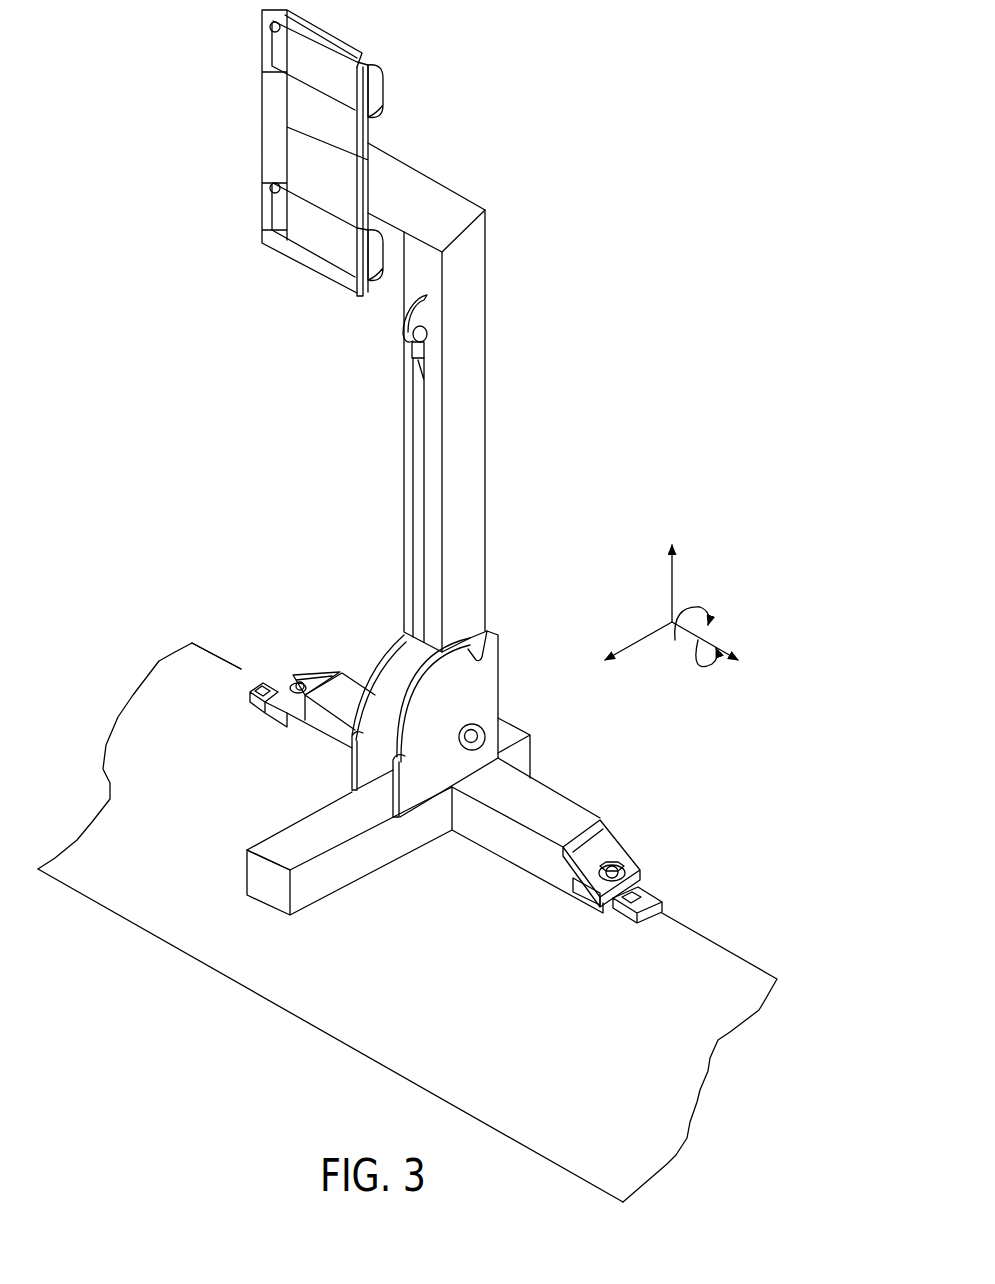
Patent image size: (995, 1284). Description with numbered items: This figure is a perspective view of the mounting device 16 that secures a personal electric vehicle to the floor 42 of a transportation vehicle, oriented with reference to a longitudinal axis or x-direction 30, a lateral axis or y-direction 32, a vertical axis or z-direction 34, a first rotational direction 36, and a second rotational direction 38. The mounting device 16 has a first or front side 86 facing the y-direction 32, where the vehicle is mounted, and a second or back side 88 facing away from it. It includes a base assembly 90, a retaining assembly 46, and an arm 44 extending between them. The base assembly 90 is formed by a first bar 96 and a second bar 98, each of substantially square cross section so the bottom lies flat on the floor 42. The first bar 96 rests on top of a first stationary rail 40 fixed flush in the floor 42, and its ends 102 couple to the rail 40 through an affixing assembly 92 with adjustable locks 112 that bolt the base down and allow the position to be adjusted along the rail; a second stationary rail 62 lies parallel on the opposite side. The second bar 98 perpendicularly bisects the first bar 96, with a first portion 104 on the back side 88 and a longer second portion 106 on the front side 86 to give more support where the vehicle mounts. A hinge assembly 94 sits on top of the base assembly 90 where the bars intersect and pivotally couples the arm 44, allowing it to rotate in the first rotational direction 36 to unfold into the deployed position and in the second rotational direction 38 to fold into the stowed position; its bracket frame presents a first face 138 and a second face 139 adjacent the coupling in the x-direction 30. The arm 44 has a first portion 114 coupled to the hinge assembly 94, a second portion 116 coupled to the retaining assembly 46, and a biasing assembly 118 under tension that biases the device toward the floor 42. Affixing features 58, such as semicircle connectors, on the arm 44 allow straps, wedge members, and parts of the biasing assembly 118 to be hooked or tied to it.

The mounting device 16 is at (163, 26).
The retaining assembly 46 is at (212, 86).
The second portion 116 is at (420, 188).
The second or back side 88 is at (590, 207).
The first or front side 86 is at (212, 352).
The affixing features 58 is at (403, 326).
The biasing assembly 118 is at (398, 400).
The arm 44 is at (491, 431).
The first portion 114 is at (472, 462).
The vertical axis or z-direction 34 is at (668, 575).
The first rotational direction 36 is at (703, 620).
The lateral axis or y-direction 32 is at (640, 636).
The longitudinal axis or x-direction 30 is at (720, 641).
The second rotational direction 38 is at (712, 662).
The first stationary rail 40 is at (236, 651).
The affixing assembly 92 is at (452, 786).
The ends 102 is at (620, 812).
The first face 138 is at (395, 666).
The second face 139 is at (494, 667).
The hinge assembly 94 is at (477, 705).
The adjustable locks 112 is at (622, 920).
The first portion 104 is at (515, 735).
The floor 42 is at (118, 801).
The second portion 106 is at (288, 835).
The second stationary rail 62 is at (80, 904).
The second bar 98 is at (334, 849).
The first bar 96 is at (512, 850).
The base assembly 90 is at (453, 786).